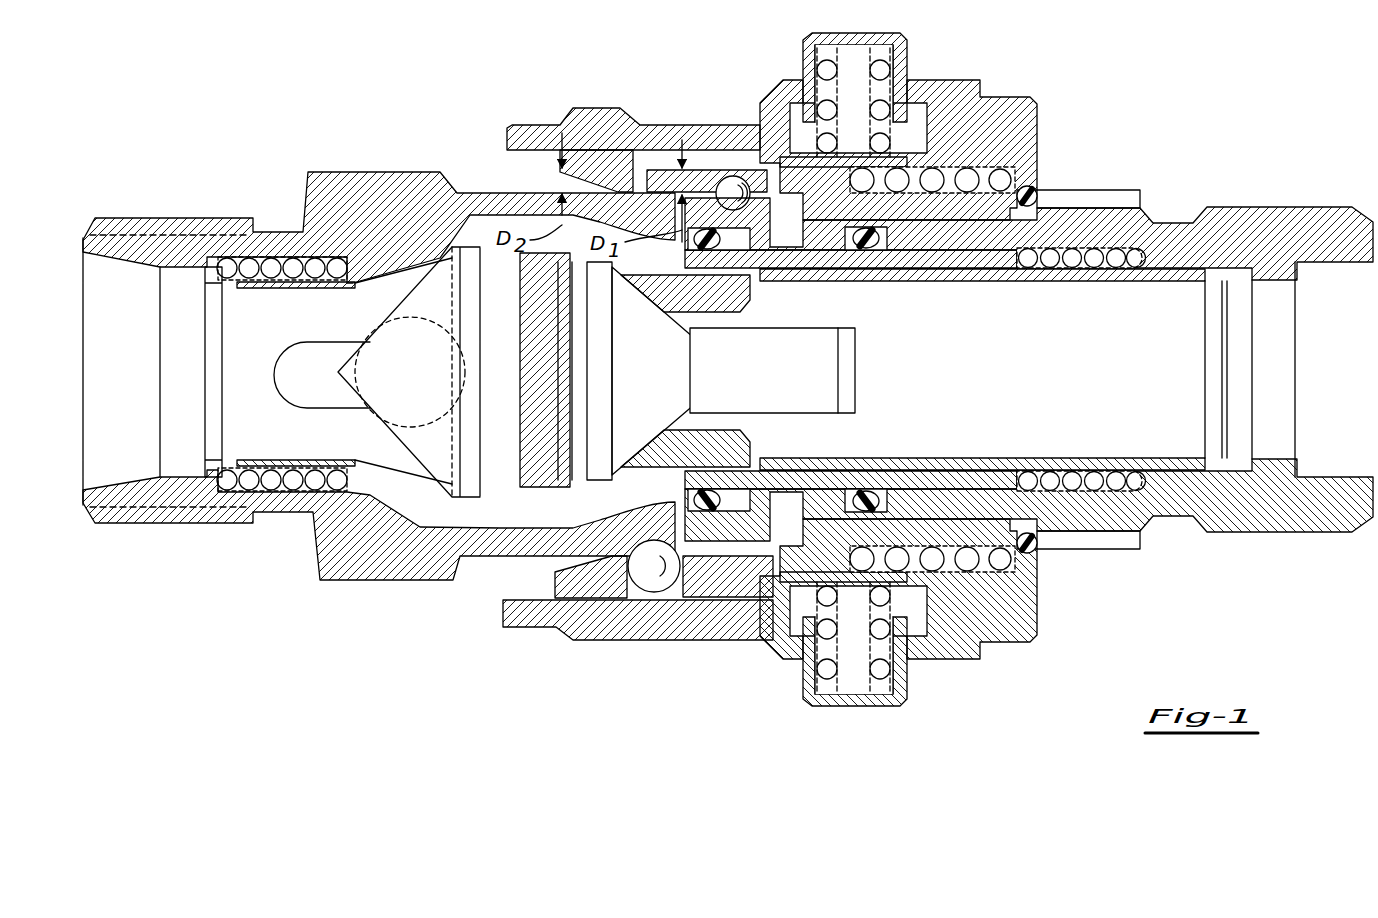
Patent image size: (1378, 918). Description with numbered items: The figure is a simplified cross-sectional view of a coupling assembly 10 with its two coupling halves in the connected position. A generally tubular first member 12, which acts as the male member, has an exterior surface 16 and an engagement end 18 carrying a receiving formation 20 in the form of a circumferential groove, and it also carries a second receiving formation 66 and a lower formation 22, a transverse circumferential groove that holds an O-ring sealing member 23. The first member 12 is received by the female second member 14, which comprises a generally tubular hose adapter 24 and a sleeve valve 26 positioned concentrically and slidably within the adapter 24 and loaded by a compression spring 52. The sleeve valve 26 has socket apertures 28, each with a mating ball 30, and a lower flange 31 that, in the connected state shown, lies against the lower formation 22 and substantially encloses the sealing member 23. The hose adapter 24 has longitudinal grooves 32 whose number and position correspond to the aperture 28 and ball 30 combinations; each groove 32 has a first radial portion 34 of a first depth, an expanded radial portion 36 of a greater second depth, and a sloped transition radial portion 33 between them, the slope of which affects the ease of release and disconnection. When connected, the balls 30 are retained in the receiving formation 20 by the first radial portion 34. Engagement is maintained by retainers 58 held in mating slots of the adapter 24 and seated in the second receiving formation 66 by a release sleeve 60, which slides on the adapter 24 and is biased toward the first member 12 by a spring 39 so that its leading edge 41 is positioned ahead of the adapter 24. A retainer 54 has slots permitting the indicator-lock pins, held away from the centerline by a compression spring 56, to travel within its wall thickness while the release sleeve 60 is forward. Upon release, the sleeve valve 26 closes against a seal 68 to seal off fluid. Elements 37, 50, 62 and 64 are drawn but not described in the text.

The coupling assembly 10 is at (1110, 46).
The first member 12 is at (420, 158).
The second member 14 is at (1158, 160).
The exterior surface 16 is at (598, 140).
The engagement end 18 is at (770, 258).
The receiving formation 20 is at (692, 186).
The lower formation 22 is at (716, 250).
The sealing member 23 is at (685, 371).
The hose adapter 24 is at (578, 165).
The sleeve valve 26 is at (790, 207).
The socket aperture 28 is at (745, 172).
The ball 30 is at (733, 176).
The lower flange 31 is at (660, 290).
The longitudinal groove 32 is at (575, 160).
The transition radial portion 33 is at (643, 140).
The first radial portion 34 is at (665, 178).
The expanded radial portion 36 is at (600, 182).
The detent housing 37 is at (925, 120).
The spring 39 is at (1030, 186).
The leading edge 41 is at (510, 140).
The locking sleeve 50 is at (615, 640).
The compression spring 52 is at (1130, 265).
The retainer 54 is at (1035, 620).
The compression spring 56 is at (880, 680).
The retainer 58 is at (662, 580).
The release sleeve 60 is at (555, 634).
The poppet valve 62 is at (700, 410).
The valve guide 64 is at (500, 472).
The second receiving formation 66 is at (610, 600).
The seal 68 is at (582, 484).